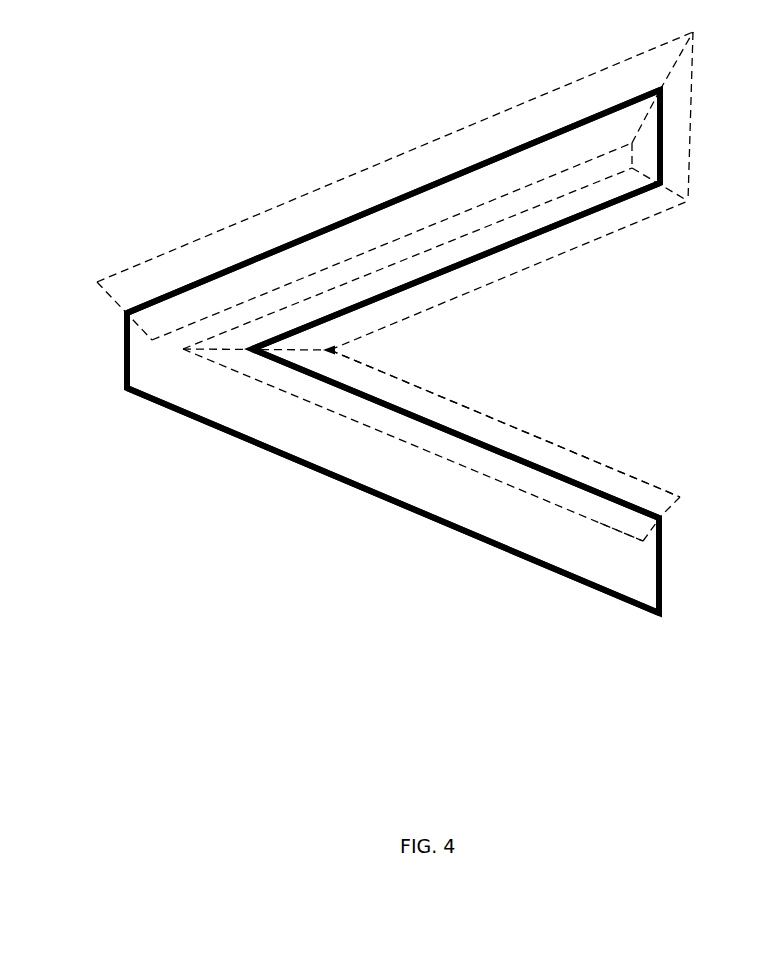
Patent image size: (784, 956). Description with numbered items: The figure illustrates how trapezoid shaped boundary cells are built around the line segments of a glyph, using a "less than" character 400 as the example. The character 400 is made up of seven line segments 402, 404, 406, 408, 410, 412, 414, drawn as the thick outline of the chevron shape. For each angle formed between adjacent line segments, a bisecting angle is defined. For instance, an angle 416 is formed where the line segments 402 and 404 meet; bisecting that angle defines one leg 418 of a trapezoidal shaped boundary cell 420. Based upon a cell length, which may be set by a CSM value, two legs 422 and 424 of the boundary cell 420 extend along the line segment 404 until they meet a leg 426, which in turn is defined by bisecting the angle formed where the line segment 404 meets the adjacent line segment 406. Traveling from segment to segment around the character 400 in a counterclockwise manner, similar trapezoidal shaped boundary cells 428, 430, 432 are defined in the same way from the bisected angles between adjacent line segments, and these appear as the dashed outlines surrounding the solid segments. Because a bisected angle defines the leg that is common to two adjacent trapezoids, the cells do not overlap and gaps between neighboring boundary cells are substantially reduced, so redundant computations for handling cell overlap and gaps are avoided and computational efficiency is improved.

The "less than" character 400 is at (62, 192).
The line segment 402 is at (660, 567).
The line segment 404 is at (605, 495).
The line segment 406 is at (545, 232).
The line segment 408 is at (662, 135).
The line segment 410 is at (507, 152).
The line segment 412 is at (125, 357).
The line segment 414 is at (430, 518).
The angle 416 is at (651, 533).
The leg 418 is at (667, 511).
The trapezoidal shaped boundary cell 420 is at (437, 394).
The leg 422 is at (488, 420).
The leg 424 is at (367, 425).
The leg 426 is at (293, 348).
The trapezoidal shaped boundary cell 428 is at (634, 226).
The trapezoidal shaped boundary cell 430 is at (692, 99).
The trapezoidal shaped boundary cell 432 is at (340, 176).